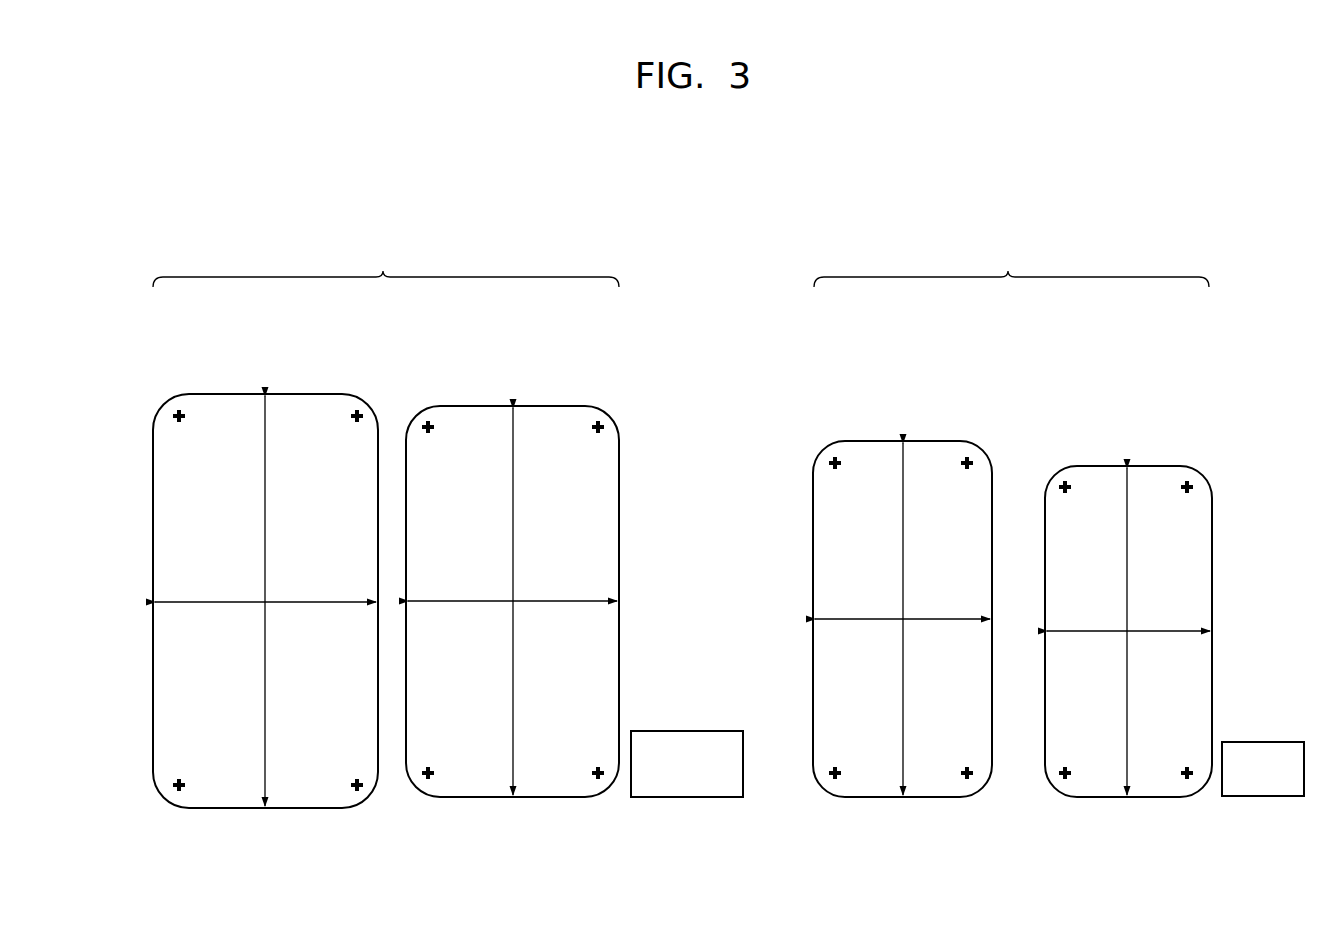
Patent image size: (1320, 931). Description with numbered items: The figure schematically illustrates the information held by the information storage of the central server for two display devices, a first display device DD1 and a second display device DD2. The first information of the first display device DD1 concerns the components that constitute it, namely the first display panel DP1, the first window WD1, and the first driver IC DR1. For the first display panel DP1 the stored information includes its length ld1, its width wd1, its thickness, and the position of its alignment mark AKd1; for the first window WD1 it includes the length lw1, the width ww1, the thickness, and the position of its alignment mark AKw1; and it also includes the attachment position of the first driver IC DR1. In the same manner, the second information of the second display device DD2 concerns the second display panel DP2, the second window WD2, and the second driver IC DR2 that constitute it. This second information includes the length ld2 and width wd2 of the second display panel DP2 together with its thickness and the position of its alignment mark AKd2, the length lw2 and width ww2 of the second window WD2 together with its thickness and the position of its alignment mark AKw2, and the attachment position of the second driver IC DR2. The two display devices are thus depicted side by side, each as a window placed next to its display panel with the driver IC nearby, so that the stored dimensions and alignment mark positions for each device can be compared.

The first display device DD1 is at (386, 263).
The second display device DD2 is at (1011, 260).
The first window WD1 is at (265, 394).
The second window WD2 is at (903, 441).
The first display panel DP1 is at (513, 406).
The second display panel DP2 is at (1127, 466).
The alignment mark of the first window AKw1 is at (178, 411).
The alignment mark of the second window AKw2 is at (834, 459).
The alignment mark of the first display panel AKd1 is at (428, 422).
The alignment mark of the second display panel AKd2 is at (1065, 483).
The first driver IC DR1 is at (684, 731).
The second driver IC DR2 is at (1258, 742).
The length of the first window lw1 is at (287, 601).
The length of the second window lw2 is at (923, 619).
The length of the first display panel ld1 is at (531, 601).
The length of the second display panel ld2 is at (1145, 631).
The width of the first window ww1 is at (265, 588).
The width of the second window ww2 is at (902, 606).
The width of the first display panel wd1 is at (512, 587).
The width of the second display panel wd2 is at (1128, 618).